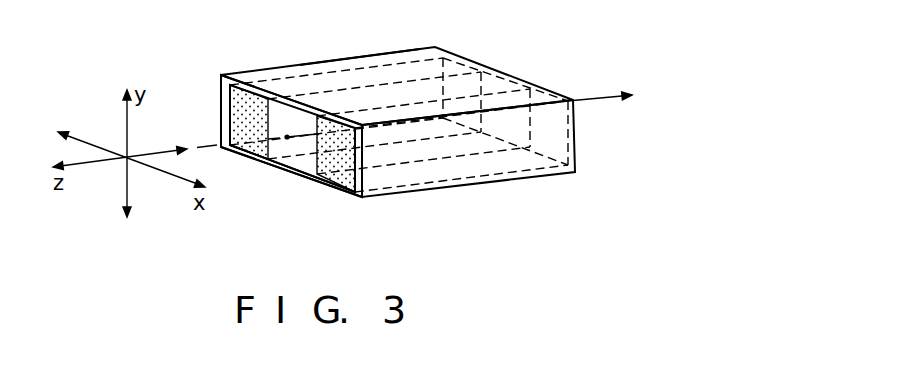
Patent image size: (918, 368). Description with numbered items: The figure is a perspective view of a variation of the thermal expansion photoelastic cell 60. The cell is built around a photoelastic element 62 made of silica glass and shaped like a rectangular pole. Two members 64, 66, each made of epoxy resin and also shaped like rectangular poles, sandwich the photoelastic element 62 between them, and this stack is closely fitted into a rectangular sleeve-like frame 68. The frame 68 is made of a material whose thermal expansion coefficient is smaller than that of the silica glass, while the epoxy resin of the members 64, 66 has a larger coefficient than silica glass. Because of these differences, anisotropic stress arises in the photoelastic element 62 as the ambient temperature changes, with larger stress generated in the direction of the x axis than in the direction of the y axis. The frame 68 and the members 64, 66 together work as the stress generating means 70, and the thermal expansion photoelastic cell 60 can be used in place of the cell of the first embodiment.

The thermal expansion photoelastic cell 60 is at (399, 42).
The photoelastic element 62 is at (292, 145).
The member 64 is at (236, 122).
The member 66 is at (343, 179).
The rectangular sleeve-like frame 68 is at (303, 63).
The stress generating means 70 is at (317, 191).